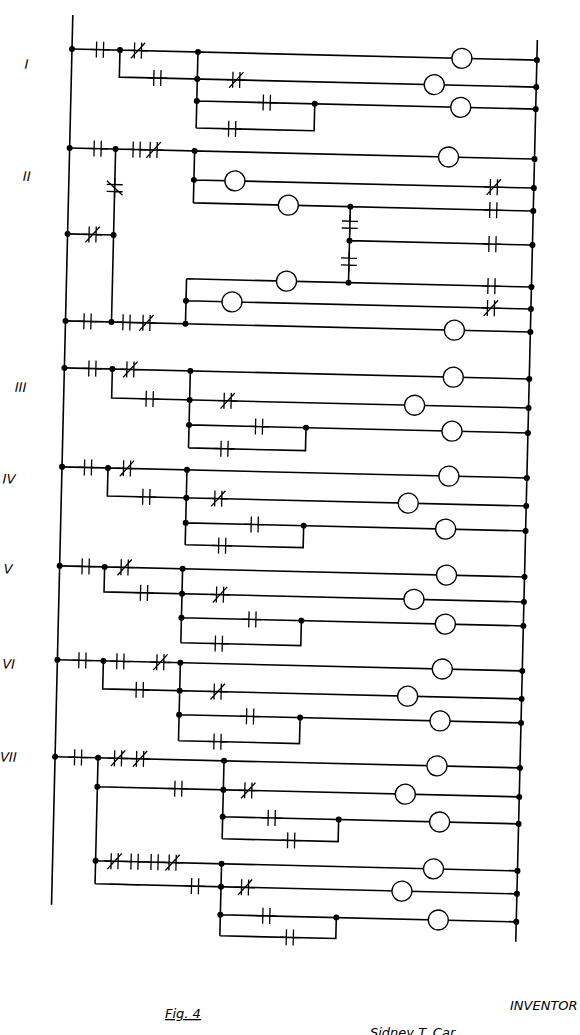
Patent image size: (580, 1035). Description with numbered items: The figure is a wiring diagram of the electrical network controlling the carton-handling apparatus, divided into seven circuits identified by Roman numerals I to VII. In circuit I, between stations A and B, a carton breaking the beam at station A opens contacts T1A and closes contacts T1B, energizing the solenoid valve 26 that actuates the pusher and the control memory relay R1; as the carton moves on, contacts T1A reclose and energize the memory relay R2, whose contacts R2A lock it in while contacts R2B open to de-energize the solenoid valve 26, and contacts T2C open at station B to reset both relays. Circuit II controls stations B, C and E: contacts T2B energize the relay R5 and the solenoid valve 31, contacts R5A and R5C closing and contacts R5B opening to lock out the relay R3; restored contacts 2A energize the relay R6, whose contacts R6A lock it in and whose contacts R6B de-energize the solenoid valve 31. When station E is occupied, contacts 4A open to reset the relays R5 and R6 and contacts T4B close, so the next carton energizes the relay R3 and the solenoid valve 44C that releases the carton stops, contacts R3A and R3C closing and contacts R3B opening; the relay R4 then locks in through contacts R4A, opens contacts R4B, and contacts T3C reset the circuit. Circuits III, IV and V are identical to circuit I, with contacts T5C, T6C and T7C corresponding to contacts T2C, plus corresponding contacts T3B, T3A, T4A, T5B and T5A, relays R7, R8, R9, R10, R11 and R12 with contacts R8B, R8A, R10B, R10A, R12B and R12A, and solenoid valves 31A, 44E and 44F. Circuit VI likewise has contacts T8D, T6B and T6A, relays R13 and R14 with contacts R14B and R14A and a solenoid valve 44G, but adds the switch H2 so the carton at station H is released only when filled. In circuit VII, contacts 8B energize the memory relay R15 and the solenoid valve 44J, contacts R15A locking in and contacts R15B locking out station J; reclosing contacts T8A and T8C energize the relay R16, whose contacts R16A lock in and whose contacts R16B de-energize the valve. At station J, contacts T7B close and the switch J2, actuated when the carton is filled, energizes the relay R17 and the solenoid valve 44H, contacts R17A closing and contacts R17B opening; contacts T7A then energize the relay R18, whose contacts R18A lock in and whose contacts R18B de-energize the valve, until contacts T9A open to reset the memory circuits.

The electric eye contact T2C is at (101, 41).
The electric eye contact T1B is at (141, 42).
The control memory relay R1 is at (476, 37).
The relay contact R2B is at (249, 75).
The electric eye contact T1A is at (277, 97).
The relay contact R2A is at (243, 134).
The solenoid valve 26 is at (425, 77).
The control memory relay R2 is at (469, 106).
The relay contact R3A is at (98, 140).
The electric eye contact T3C is at (138, 141).
The relay contact R5B is at (163, 157).
The electric eye contact T4B is at (124, 327).
The electric eye contact T2B is at (89, 244).
The relay contact R5A is at (84, 312).
The electric eye contact 4A is at (126, 312).
The relay contact R3B is at (153, 314).
The relay R3 is at (458, 144).
The solenoid valve 44C is at (249, 177).
The relay R4 is at (286, 214).
The relay contact R4B is at (474, 188).
The relay contact R4A is at (474, 212).
The relay contact R3C is at (366, 224).
The relay contact R5C is at (365, 261).
The electric eye contact 2A is at (499, 238).
The relay R6 is at (286, 273).
The relay contact R6A is at (476, 279).
The relay contact R6B is at (475, 302).
The solenoid valve 31 is at (237, 310).
The relay R5 is at (454, 338).
The electric eye contact T5C is at (93, 360).
The timer T3 contact B T3B is at (130, 361).
The relay R7 (coil and contact) R7 is at (475, 359).
The relay R8 contact B R8B is at (240, 396).
The timer T3 contact A T3A is at (270, 421).
The relay R8 contact A R8A is at (235, 454).
The solenoid 31A is at (413, 396).
The relay R8 coil R8 is at (469, 430).
The electric eye contact T6C is at (89, 459).
The relay R9 (coil and contact) R9 is at (474, 458).
The relay R10 contact B R10B is at (235, 493).
The electric eye contact T4A is at (266, 519).
The relay R10 contact A R10A is at (237, 550).
The solenoid valve 44E is at (395, 498).
The relay R10 coil R10 is at (460, 536).
The electric eye contact T7C is at (84, 558).
The timer T5 contact B T5B is at (122, 559).
The relay R11 (coil and contact) R11 is at (310, 589).
The relay R12 contact B R12B is at (238, 590).
The timer T5 contact A T5A is at (263, 614).
The relay R12 contact A R12A is at (234, 648).
The solenoid valve 44F is at (417, 591).
The relay R12 coil R12 is at (459, 631).
The electric eye contact T8D is at (79, 652).
The switch H2 is at (121, 652).
The timer T6 contact B T6B is at (158, 654).
The relay R13 (coil and contact) R13 is at (305, 684).
The relay R14 contact B R14B is at (236, 687).
The timer T6 contact A T6A is at (261, 711).
The relay R14 contact A R14A is at (232, 746).
The solenoid valve 44G is at (393, 692).
The relay R14 coil R14 is at (454, 729).
The electric eye contact T9A is at (76, 749).
The relay contact R17B is at (134, 753).
The electric eye contact 8B is at (147, 766).
The relay contact R15A is at (182, 796).
The relay contact R16B is at (266, 786).
The electric eye contact T8A is at (282, 813).
The relay contact R16A is at (303, 846).
The memory relay R15 is at (453, 763).
The solenoid valve 44J is at (391, 790).
The memory relay R16 is at (454, 819).
The relay contact R15B is at (117, 854).
The electric eye contact T8C is at (144, 854).
The electric eye contact T7B is at (194, 855).
The switch J2 is at (125, 876).
The relay contact R17A is at (192, 894).
The relay contact R18B is at (263, 883).
The electric eye contact T7A is at (276, 911).
The relay contact R18A is at (301, 944).
The memory relay R17 is at (461, 853).
The solenoid valve 44H is at (389, 887).
The memory relay R18 is at (452, 928).